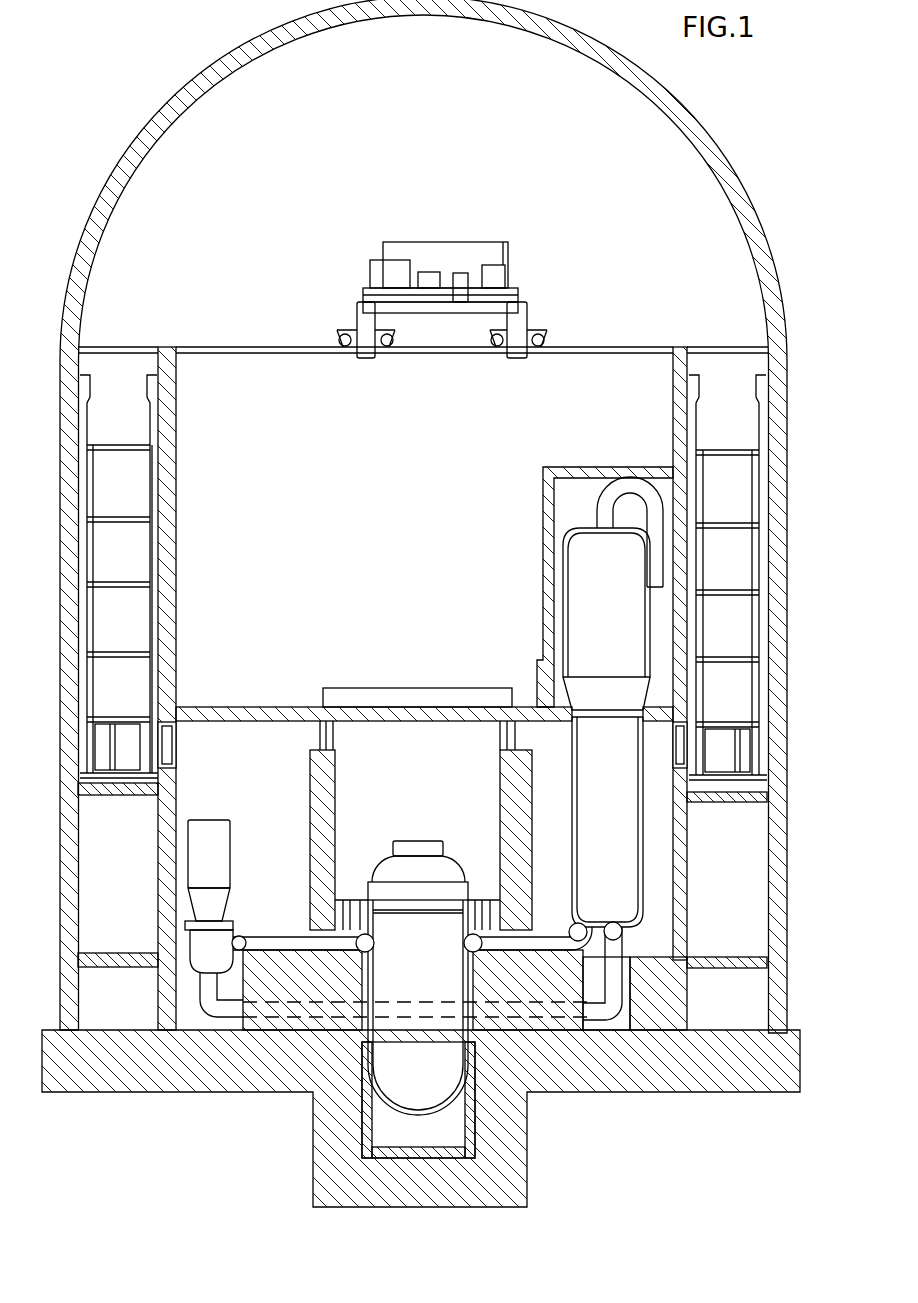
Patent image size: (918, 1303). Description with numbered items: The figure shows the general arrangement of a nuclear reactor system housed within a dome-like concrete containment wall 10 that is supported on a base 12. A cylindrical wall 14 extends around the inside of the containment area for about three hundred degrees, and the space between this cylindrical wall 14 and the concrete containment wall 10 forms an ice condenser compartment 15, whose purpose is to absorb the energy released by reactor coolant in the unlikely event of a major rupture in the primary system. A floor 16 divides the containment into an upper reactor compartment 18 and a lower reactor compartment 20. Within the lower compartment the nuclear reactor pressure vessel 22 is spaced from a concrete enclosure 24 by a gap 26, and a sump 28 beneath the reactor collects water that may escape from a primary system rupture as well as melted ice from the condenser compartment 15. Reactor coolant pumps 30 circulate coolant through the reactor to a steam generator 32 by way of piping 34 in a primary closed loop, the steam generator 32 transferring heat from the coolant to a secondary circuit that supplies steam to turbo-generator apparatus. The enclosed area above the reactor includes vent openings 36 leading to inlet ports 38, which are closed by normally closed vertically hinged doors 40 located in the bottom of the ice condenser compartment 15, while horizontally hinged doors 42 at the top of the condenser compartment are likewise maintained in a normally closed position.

The concrete containment wall 10 is at (127, 158).
The base 12 is at (212, 1092).
The cylindrical wall 14 is at (673, 432).
The ice condenser compartment 15 is at (135, 553).
The floor 16 is at (243, 706).
The upper reactor compartment 18 is at (388, 570).
The lower reactor compartment 20 is at (258, 797).
The nuclear reactor pressure vessel 22 is at (428, 922).
The concrete enclosure 24 is at (358, 992).
The gap 26 is at (472, 969).
The sump 28 is at (455, 1131).
The reactor coolant pump 30 is at (222, 846).
The steam generator 32 is at (575, 590).
The piping 34 is at (605, 506).
The vent openings 36 is at (334, 742).
The inlet ports 38 is at (168, 746).
The vertically hinged doors 40 is at (145, 757).
The horizontally hinged doors 42 is at (141, 347).